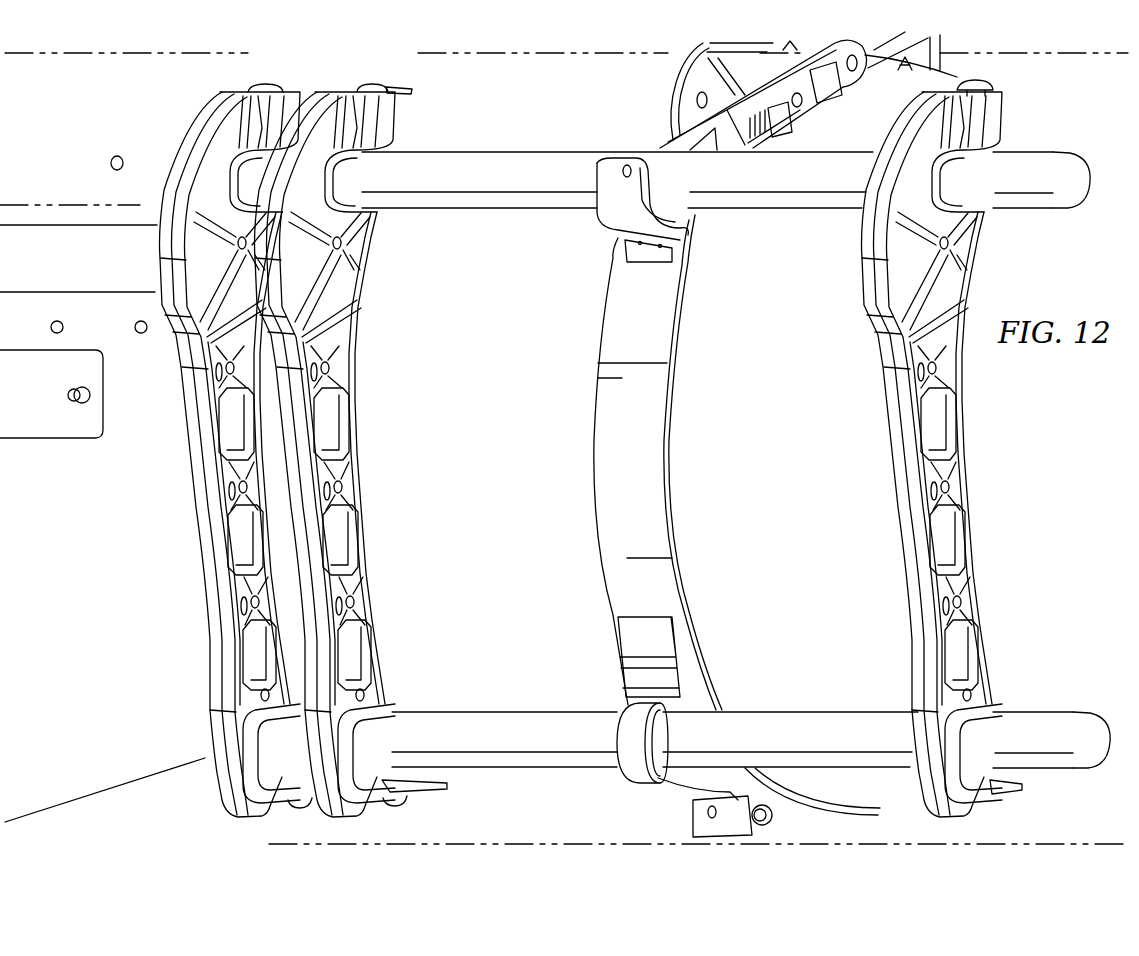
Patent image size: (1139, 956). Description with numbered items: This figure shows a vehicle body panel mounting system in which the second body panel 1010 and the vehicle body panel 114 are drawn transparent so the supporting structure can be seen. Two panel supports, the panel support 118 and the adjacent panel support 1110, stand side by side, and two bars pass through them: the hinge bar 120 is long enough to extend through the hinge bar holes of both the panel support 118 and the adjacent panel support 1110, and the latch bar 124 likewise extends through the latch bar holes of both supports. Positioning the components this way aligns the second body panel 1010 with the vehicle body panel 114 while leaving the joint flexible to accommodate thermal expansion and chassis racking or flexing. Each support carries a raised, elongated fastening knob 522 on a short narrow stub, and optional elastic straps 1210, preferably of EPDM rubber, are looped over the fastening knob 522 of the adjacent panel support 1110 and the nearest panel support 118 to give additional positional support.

The second body panel 1010 is at (103, 55).
The vehicle body panel 114 is at (553, 55).
The adjacent panel support 1110 is at (192, 500).
The panel support 118 is at (353, 405).
The hinge bar 120 is at (535, 210).
The latch bar 124 is at (503, 712).
The fastening knob 522 is at (258, 78).
The elastic straps 1210 is at (410, 90).